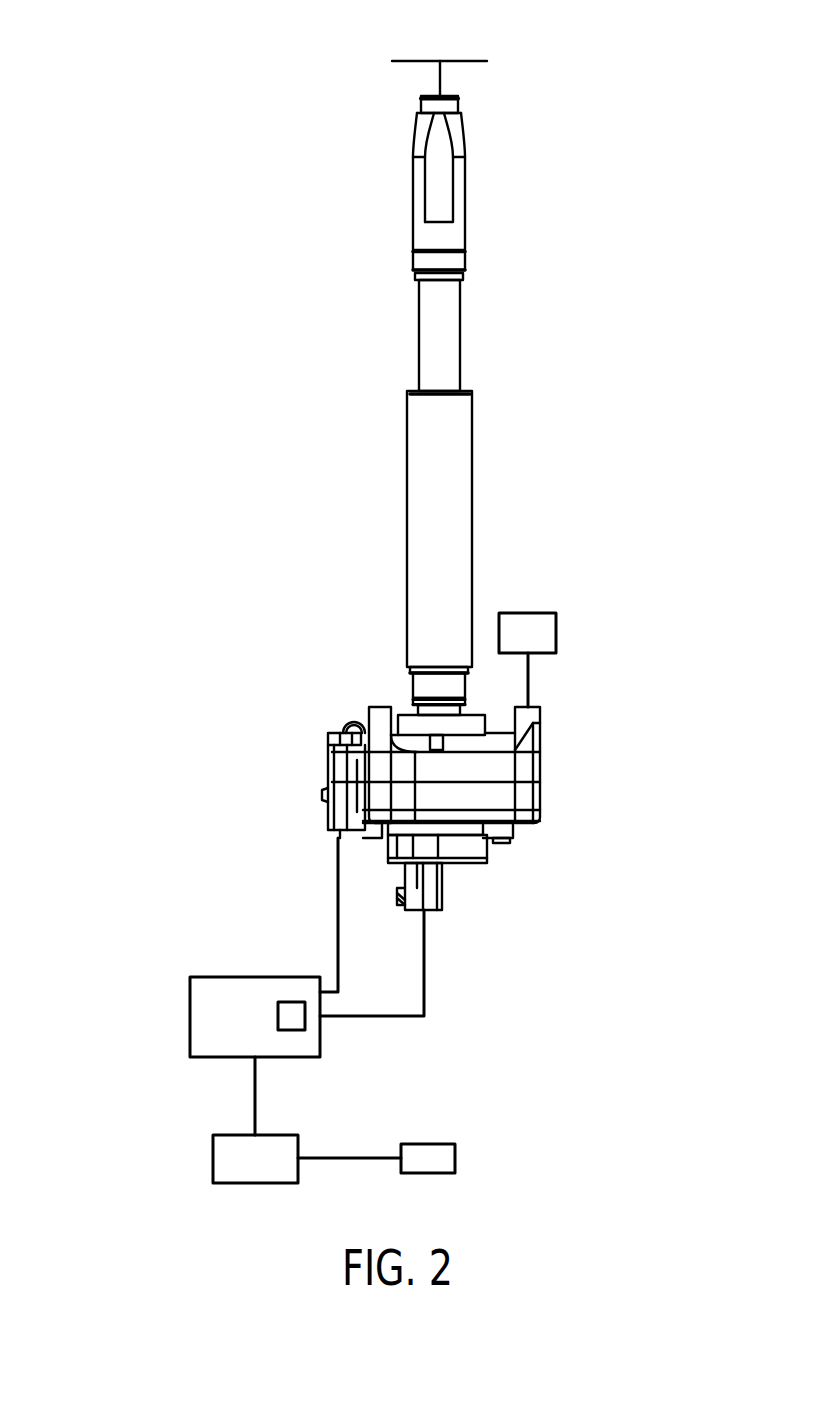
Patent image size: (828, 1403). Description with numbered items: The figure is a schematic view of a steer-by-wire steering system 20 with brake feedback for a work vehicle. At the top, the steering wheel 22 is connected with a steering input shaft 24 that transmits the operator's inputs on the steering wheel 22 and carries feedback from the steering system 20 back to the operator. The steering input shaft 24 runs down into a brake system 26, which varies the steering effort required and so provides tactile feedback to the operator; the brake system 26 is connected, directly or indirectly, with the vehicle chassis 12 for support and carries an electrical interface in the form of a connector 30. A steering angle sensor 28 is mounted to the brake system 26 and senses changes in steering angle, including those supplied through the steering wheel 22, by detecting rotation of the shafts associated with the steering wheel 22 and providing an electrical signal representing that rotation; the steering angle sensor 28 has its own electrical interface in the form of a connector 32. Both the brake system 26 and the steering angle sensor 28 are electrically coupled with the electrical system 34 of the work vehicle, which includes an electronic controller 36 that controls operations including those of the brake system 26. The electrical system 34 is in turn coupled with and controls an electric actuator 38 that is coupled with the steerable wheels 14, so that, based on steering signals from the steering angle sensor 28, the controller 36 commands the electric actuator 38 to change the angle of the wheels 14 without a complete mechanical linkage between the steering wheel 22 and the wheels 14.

The vehicle chassis 12 is at (556, 628).
The steerable wheels 14 is at (455, 1163).
The steering system 20 is at (504, 531).
The steering wheel 22 is at (457, 60).
The steering input shaft 24 is at (460, 337).
The brake system 26 is at (540, 757).
The steering angle sensor 28 is at (488, 852).
The connector 30 is at (328, 780).
The connector 32 is at (445, 888).
The electrical system 34 is at (190, 1018).
The electronic controller 36 is at (278, 1016).
The electric actuator 38 is at (213, 1160).